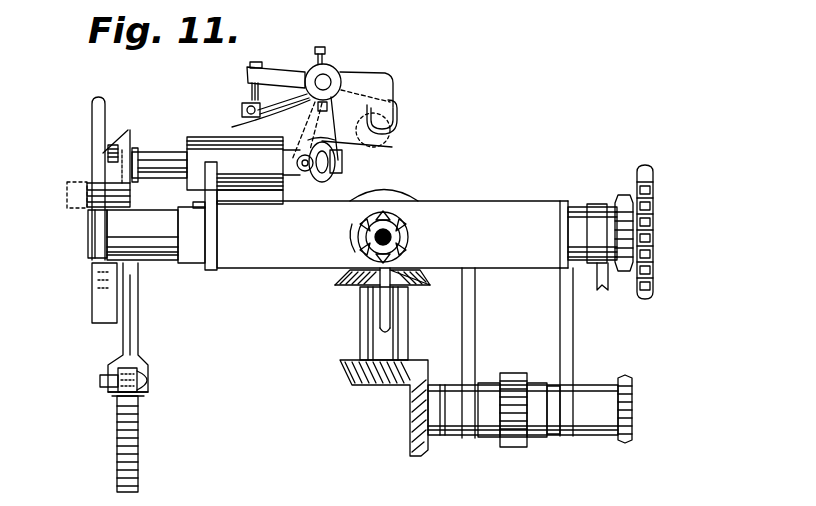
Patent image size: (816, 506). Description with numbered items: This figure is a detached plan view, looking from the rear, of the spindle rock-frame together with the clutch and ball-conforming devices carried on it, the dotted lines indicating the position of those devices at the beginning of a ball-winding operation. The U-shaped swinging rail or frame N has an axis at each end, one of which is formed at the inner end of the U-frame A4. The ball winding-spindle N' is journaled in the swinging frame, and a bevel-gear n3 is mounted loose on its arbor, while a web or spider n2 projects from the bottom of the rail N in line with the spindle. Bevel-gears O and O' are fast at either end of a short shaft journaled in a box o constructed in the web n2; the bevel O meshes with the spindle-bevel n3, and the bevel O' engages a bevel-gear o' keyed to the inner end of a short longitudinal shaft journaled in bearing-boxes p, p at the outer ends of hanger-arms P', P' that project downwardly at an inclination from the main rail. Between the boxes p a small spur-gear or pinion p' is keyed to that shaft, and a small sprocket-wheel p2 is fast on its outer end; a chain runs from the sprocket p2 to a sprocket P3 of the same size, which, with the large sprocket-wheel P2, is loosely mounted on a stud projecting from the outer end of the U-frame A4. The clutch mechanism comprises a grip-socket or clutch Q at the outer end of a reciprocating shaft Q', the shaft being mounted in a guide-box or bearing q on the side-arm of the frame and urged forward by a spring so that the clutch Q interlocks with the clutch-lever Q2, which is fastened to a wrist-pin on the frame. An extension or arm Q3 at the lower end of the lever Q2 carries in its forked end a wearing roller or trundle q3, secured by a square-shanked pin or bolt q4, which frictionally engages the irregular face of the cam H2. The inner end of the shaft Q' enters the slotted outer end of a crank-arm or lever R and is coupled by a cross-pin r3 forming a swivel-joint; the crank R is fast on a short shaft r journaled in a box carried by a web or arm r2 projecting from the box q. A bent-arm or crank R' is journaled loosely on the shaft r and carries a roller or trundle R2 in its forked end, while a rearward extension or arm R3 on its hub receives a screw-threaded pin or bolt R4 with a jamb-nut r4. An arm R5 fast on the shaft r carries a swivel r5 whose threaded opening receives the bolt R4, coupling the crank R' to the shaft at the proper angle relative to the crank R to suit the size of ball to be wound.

The swinging rail or frame N is at (386, 216).
The ball winding-spindle N' is at (396, 237).
The bevel-gear n3 is at (398, 185).
The web or spider n2 is at (380, 308).
The guide-box or bearing q is at (243, 170).
The grip-socket or clutch Q is at (146, 205).
The reciprocating shaft Q' is at (252, 154).
The clutch-lever Q2 is at (97, 170).
The extension or arm Q3 is at (118, 340).
The wearing roller or trundle q3 is at (112, 410).
The square-shanked pin or bolt q4 is at (108, 382).
The cam H2 is at (144, 444).
The short shaft r is at (323, 82).
The web or arm r2 is at (232, 127).
The cross-pin r3 is at (322, 175).
The jamb-nut r4 is at (248, 82).
The swivel r5 is at (250, 128).
The crank-arm or lever R is at (366, 146).
The bent-arm or crank R' is at (382, 85).
The roller or trundle R2 is at (398, 117).
The rearward extension or arm R3 is at (277, 72).
The screw-threaded pin or bolt R4 is at (247, 102).
The arm R5 is at (292, 85).
The U-frame A4 is at (597, 222).
The sprocket P3 is at (623, 193).
The large sprocket-wheel P2 is at (655, 203).
The hanger-arms P' is at (517, 353).
The bevel-gear O is at (388, 314).
The bevel-gear O' is at (372, 408).
The box o is at (417, 323).
The bevel-gear o' is at (522, 431).
The bearing-boxes p is at (512, 429).
The spur-gear or pinion p' is at (513, 424).
The small sprocket-wheel p2 is at (631, 418).